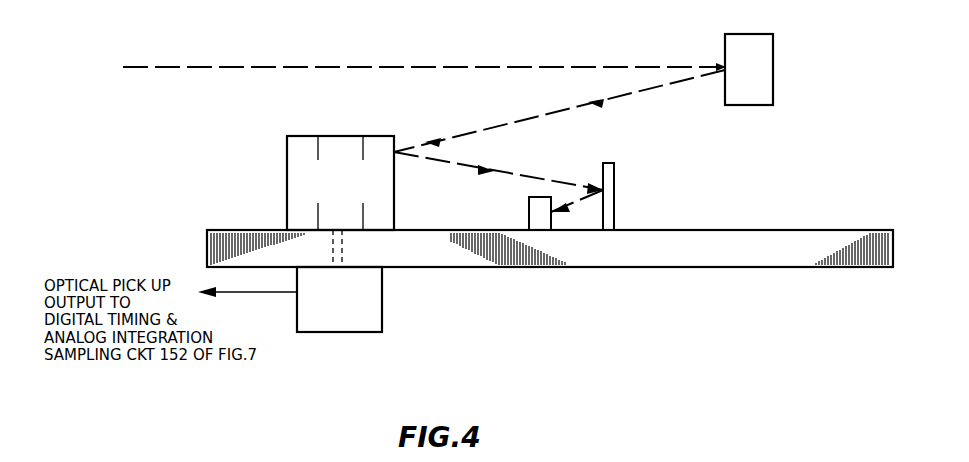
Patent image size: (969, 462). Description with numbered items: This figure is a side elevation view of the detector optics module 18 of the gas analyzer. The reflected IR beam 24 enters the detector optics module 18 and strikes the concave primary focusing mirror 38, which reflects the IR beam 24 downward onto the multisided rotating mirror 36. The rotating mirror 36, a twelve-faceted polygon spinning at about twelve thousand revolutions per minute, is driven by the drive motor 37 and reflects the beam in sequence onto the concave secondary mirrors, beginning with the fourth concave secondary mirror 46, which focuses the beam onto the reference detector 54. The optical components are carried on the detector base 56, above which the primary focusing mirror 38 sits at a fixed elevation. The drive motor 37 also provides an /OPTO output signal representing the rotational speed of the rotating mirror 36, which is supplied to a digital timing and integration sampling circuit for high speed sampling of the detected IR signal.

The reflected IR beam 24 is at (214, 64).
The rotating mirror 36 is at (303, 145).
The primary focusing mirror 38 is at (764, 70).
The drive motor 37 is at (352, 324).
The reference detector 54 is at (529, 205).
The fourth concave secondary mirror 46 is at (614, 197).
The detector base 56 is at (633, 255).
The detector optics module 18 is at (663, 291).